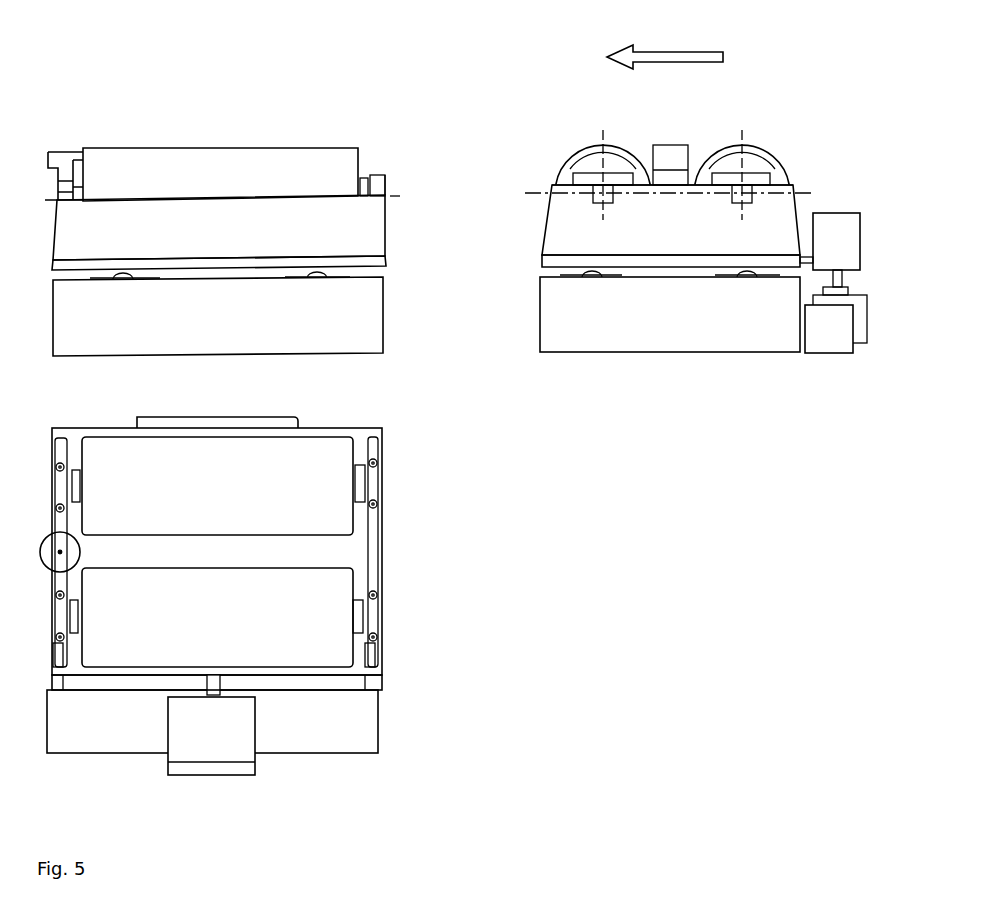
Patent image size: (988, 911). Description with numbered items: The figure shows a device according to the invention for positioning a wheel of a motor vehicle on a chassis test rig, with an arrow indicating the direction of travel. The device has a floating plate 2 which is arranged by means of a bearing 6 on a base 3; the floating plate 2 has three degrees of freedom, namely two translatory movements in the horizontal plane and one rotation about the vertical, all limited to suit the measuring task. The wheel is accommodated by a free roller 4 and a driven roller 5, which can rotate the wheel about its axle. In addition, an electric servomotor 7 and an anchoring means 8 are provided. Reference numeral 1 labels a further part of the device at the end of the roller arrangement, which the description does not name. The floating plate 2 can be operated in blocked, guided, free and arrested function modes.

The bearing bracket 1 is at (48, 160).
The floating plate 2 is at (373, 262).
The base 3 is at (366, 315).
The free roller 4 is at (587, 168).
The driven roller 5 is at (765, 168).
The bearing 6 is at (745, 277).
The electric servomotor 7 is at (845, 335).
The anchoring means 8 is at (849, 223).